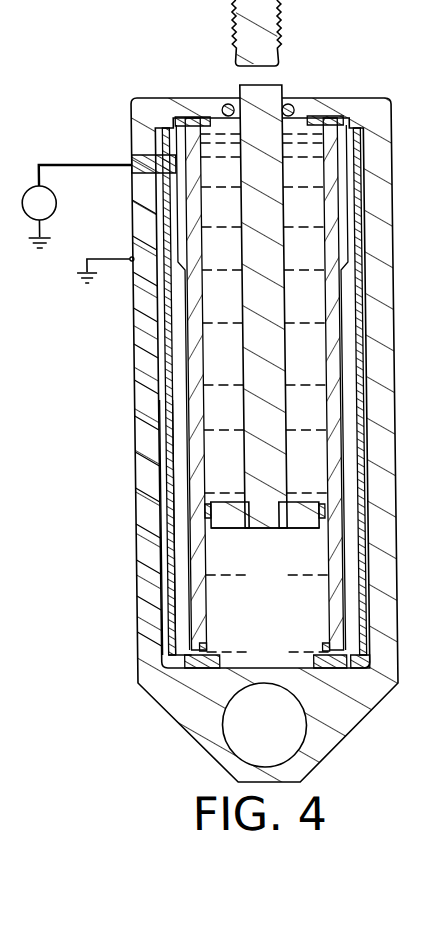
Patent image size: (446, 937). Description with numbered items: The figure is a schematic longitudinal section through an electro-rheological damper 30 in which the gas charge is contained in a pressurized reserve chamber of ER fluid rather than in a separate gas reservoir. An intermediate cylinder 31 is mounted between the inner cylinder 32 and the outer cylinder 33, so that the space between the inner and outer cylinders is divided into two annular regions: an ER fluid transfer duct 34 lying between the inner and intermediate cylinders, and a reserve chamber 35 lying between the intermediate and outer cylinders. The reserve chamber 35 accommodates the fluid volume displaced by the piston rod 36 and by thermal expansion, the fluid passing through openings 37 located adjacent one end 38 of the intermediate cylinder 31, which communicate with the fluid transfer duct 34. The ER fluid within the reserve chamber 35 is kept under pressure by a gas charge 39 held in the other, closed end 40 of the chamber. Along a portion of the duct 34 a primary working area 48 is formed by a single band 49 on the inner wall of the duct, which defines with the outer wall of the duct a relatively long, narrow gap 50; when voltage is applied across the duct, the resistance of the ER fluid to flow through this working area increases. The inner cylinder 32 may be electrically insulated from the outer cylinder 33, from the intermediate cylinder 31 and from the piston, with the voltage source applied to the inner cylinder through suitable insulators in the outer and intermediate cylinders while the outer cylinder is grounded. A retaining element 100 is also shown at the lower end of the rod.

The damper 30 is at (124, 116).
The piston rod 36 is at (237, 96).
The closed end 40 is at (163, 222).
The gas charge 39 is at (160, 252).
The ER fluid transfer duct 34 is at (182, 334).
The intermediate cylinder 31 is at (172, 355).
The outer cylinder 33 is at (143, 417).
The inner cylinder 32 is at (195, 466).
The reserve chamber 35 is at (162, 532).
The retaining nut 100 is at (232, 532).
The end of intermediate cylinder 38 is at (175, 620).
The openings 37 is at (142, 662).
The band 49 is at (335, 402).
The primary working area 48 is at (348, 455).
The gap 50 is at (347, 508).